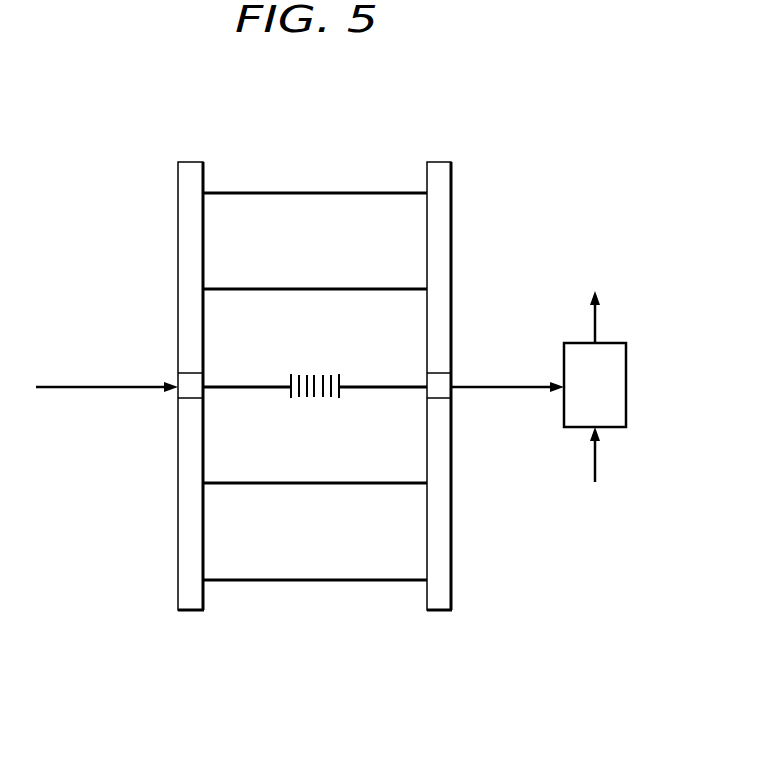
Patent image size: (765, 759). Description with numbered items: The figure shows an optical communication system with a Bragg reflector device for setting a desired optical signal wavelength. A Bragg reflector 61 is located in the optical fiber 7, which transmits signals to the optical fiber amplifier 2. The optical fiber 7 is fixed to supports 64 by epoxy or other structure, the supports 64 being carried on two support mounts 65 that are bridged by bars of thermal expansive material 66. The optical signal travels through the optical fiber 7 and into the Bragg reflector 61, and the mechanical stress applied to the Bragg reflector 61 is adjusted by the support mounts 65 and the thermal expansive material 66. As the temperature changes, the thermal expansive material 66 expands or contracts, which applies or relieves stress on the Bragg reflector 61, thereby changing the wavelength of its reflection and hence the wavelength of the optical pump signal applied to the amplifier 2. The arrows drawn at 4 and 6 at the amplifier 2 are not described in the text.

The optical fiber amplifier 2 is at (627, 387).
The pump input 4 is at (597, 465).
The output signal 6 is at (597, 322).
The optical fiber 7 is at (110, 383).
The Bragg reflector 61 is at (310, 400).
The supports 64 is at (181, 393).
The support mounts 65 is at (188, 232).
The thermal expansive material 66 is at (315, 189).